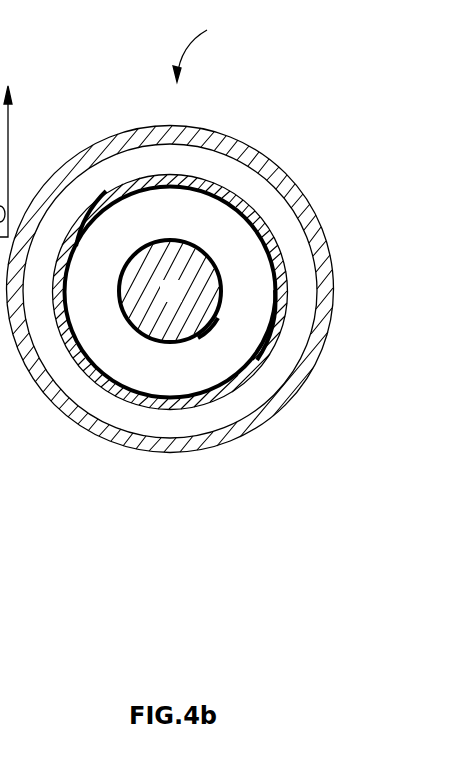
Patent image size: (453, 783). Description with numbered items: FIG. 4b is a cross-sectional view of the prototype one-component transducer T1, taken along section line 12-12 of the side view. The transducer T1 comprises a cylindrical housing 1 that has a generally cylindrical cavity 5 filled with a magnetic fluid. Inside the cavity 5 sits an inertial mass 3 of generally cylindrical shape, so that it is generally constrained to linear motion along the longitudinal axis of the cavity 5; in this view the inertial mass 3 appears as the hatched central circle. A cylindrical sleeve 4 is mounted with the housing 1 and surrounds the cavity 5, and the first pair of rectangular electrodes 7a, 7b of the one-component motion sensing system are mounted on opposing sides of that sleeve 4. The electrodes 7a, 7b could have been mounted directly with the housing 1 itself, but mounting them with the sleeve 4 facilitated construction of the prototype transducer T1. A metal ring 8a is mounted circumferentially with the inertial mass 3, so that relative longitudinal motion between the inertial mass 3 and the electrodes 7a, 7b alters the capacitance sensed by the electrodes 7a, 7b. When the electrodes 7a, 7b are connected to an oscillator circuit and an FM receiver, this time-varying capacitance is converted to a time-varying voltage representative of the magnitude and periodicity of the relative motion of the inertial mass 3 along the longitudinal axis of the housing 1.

The cylindrical housing 1 is at (256, 150).
The cylindrical sleeve 4 is at (128, 181).
The rectangular electrode 7a is at (76, 246).
The rectangular electrode 7b is at (275, 290).
The inertial mass 3 is at (170, 291).
The metal ring 8a is at (218, 318).
The cylindrical cavity 5 is at (137, 368).
The section line 12 is at (19, 149).
The one-component transducer T1 is at (204, 46).